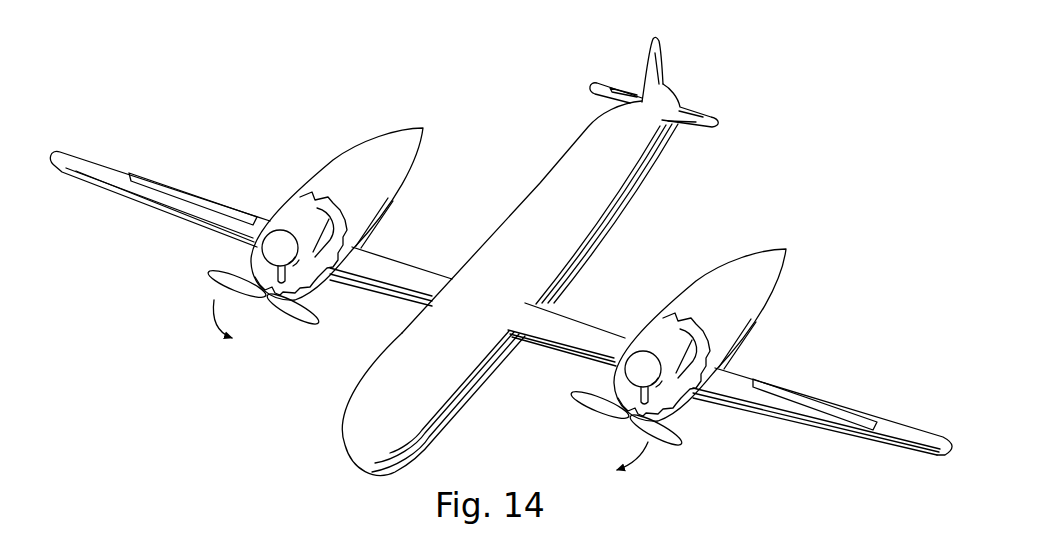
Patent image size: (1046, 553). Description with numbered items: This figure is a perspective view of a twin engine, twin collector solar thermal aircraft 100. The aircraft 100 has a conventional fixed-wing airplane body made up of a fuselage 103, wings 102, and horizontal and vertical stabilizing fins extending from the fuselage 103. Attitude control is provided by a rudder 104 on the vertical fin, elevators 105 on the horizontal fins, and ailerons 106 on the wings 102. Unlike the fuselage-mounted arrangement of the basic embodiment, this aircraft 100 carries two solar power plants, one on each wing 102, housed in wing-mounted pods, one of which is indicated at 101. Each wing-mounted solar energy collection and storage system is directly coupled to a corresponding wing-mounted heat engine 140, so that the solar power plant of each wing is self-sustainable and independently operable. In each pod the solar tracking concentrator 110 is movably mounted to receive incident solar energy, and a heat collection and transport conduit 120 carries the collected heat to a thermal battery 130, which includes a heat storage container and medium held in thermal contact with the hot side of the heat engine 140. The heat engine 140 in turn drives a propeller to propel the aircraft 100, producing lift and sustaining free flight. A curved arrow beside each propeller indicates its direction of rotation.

The aircraft 100 is at (776, 120).
The engine nacelle 101 is at (360, 135).
The wing 102 is at (100, 170).
The fuselage 103 is at (538, 193).
The rudder 104 is at (660, 68).
The elevators 105 is at (693, 104).
The ailerons 106 is at (827, 400).
The solar tracking concentrator 110 is at (340, 222).
The heat collection/transport conduit 120 is at (312, 228).
The thermal battery 130 is at (277, 253).
The heat engine 140 is at (291, 277).